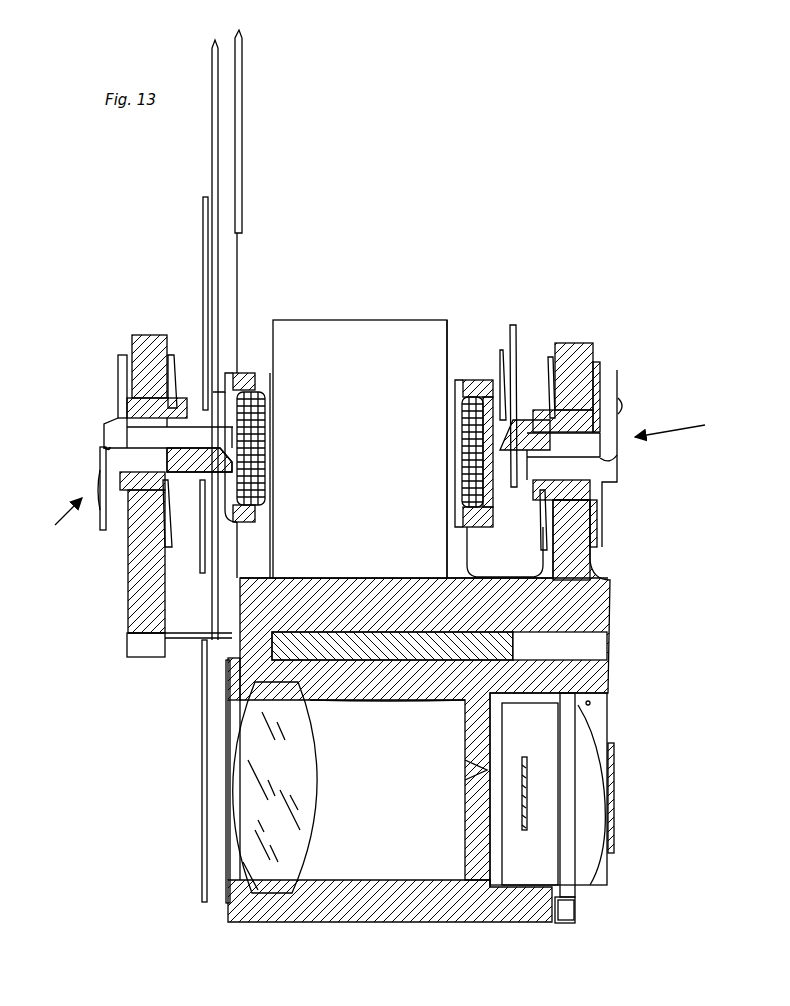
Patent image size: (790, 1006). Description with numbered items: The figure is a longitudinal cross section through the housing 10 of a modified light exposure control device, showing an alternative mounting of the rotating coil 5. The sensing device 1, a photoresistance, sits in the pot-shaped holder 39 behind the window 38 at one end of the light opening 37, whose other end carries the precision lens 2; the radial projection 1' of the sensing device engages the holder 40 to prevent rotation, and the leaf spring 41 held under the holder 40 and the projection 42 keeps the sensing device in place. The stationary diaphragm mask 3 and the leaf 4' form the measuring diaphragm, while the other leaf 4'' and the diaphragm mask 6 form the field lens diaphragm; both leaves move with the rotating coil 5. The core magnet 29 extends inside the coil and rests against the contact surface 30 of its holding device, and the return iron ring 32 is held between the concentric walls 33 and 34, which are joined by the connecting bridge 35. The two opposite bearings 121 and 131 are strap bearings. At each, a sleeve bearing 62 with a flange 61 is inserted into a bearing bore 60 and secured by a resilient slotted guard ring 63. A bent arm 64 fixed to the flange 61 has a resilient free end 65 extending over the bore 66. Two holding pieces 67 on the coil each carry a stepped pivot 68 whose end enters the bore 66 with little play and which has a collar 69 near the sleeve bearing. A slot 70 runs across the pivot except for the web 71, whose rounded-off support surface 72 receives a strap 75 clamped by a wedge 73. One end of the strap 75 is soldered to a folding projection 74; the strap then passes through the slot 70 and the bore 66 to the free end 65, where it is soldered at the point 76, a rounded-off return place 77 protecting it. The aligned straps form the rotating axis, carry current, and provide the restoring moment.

The light sensitive electrical sensing device 1 is at (595, 789).
The radial projection 1' is at (631, 914).
The precision lens 2 is at (270, 883).
The stationary diaphragm mask 3 is at (228, 845).
The leaf 4' is at (168, 771).
The leaf 4'' is at (175, 340).
The rotating coil 5 is at (468, 395).
The diaphragm mask 6 is at (240, 160).
The housing 10 is at (143, 355).
The core magnet 29 is at (388, 340).
The contact surface 30 is at (440, 578).
The return iron ring 32 is at (318, 635).
The wall 33 is at (383, 596).
The wall 34 is at (397, 690).
The connecting bridge 35 is at (252, 663).
The light opening 37 is at (322, 872).
The window 38 is at (478, 810).
The pot-shaped holder 39 is at (515, 885).
The holder 40 is at (560, 920).
The leaf spring 41 is at (613, 838).
The projection 42 is at (641, 793).
The bearing bore 60 is at (135, 525).
The flange 61 is at (118, 360).
The sleeve bearing 62 is at (130, 410).
The resilient slotted guard ring 63 is at (172, 360).
The bent arm 64 is at (127, 400).
The free end 65 is at (103, 468).
The bore 66 is at (140, 490).
The holding piece 67 is at (243, 380).
The pivot 68 is at (247, 440).
The collar 69 is at (195, 495).
The slot 70 is at (210, 380).
The web 71 is at (520, 425).
The rounded-off support surface 72 is at (227, 458).
The wedge 73 is at (228, 452).
The folding projection 74 is at (200, 573).
The strap 75 is at (145, 440).
The point 76 is at (100, 490).
The rounded-off return place 77 is at (108, 448).
The strap bearing 121 is at (616, 431).
The strap bearing 131 is at (52, 519).